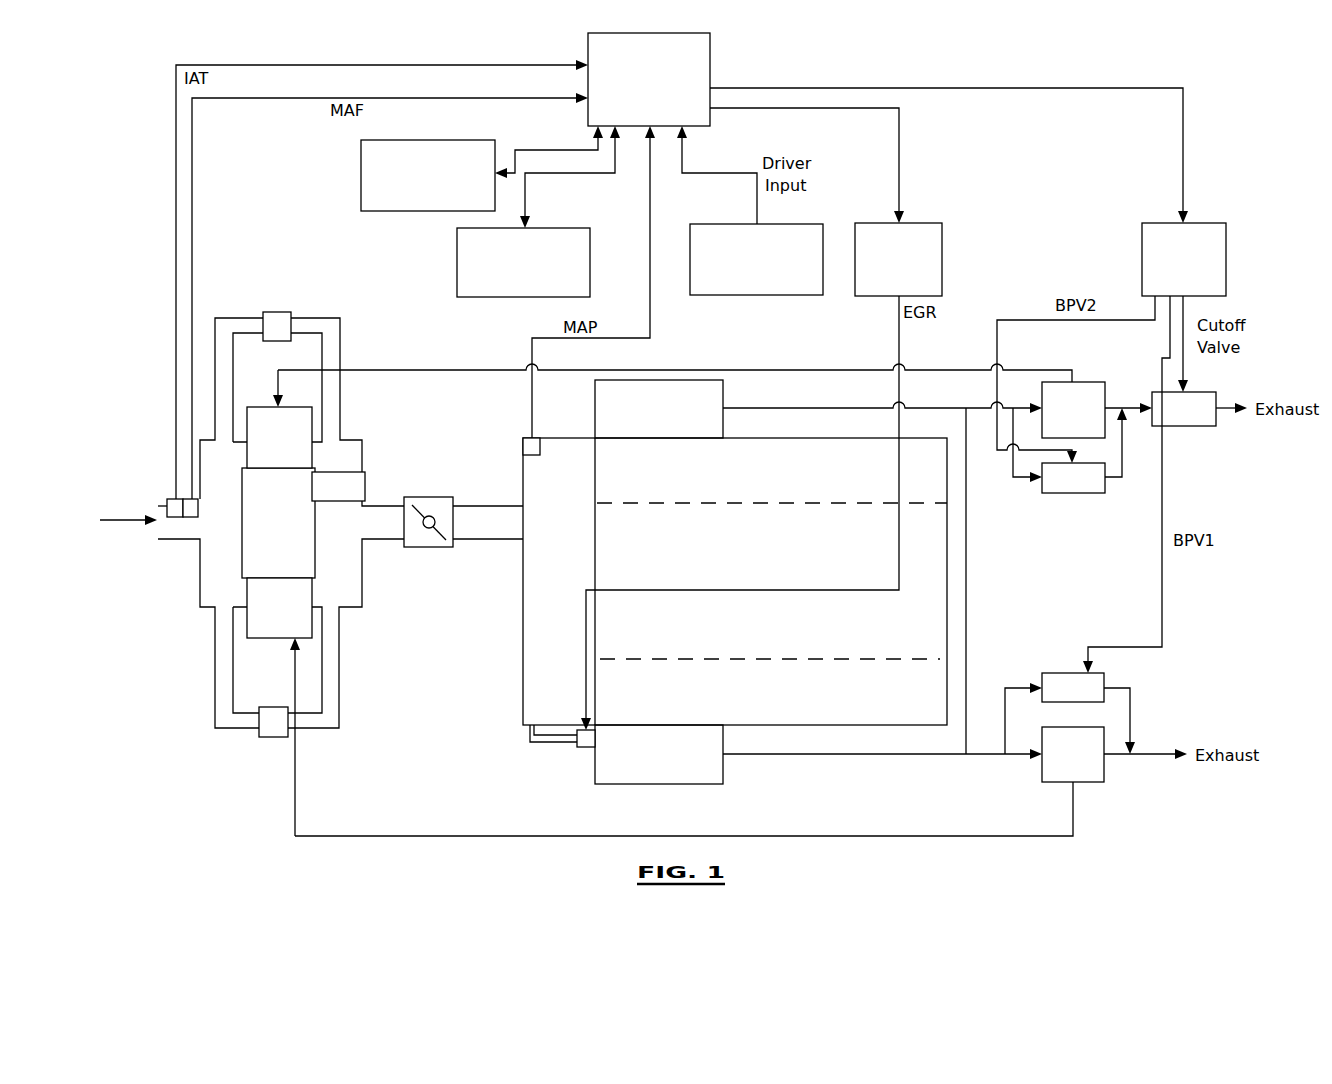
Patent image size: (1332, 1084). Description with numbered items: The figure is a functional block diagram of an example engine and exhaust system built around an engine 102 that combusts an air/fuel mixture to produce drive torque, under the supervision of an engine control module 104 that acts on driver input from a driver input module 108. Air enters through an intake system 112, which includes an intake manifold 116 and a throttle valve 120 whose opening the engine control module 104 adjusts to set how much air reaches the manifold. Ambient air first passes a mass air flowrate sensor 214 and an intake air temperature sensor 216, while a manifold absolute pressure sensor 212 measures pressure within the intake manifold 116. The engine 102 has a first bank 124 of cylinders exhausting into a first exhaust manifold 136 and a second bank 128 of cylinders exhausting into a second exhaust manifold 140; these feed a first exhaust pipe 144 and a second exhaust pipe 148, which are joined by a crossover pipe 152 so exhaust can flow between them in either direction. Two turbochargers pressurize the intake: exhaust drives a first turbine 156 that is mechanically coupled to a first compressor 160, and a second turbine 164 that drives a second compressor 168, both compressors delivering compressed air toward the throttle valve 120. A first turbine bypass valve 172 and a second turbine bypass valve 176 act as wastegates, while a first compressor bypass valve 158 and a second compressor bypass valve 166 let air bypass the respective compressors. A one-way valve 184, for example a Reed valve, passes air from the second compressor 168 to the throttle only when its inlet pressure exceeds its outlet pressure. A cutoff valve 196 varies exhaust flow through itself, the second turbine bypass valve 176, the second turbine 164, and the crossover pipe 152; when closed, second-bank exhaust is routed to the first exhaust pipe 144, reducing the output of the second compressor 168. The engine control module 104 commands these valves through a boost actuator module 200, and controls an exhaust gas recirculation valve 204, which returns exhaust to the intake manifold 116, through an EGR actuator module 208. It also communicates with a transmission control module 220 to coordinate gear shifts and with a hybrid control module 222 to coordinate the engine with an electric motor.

The engine 102 is at (947, 520).
The engine control module 104 is at (650, 33).
The driver input module 108 is at (755, 295).
The intake system 112 is at (140, 552).
The intake manifold 116 is at (522, 662).
The throttle valve 120 is at (442, 547).
The first bank of cylinders 124 is at (798, 659).
The second bank of cylinders 128 is at (801, 504).
The first exhaust manifold 136 is at (657, 784).
The second exhaust manifold 140 is at (668, 380).
The first exhaust pipe 144 is at (820, 754).
The second exhaust pipe 148 is at (775, 408).
The crossover pipe 152 is at (947, 569).
The first turbine 156 is at (1088, 782).
The first compressor bypass valve 158 is at (272, 737).
The first compressor 160 is at (282, 638).
The second turbine 164 is at (1088, 382).
The second compressor bypass valve 166 is at (278, 312).
The second compressor 168 is at (258, 407).
The first turbine bypass valve 172 is at (1068, 673).
The second turbine bypass valve 176 is at (1063, 493).
The one-way valve 184 is at (365, 485).
The cutoff valve 196 is at (1205, 426).
The boost actuator module 200 is at (1207, 223).
The exhaust gas recirculation valve 204 is at (583, 748).
The EGR actuator module 208 is at (925, 223).
The manifold absolute pressure sensor 212 is at (536, 438).
The mass air flowrate sensor 214 is at (190, 499).
The intake air temperature sensor 216 is at (168, 499).
The transmission control module 220 is at (457, 262).
The hybrid control module 222 is at (361, 172).